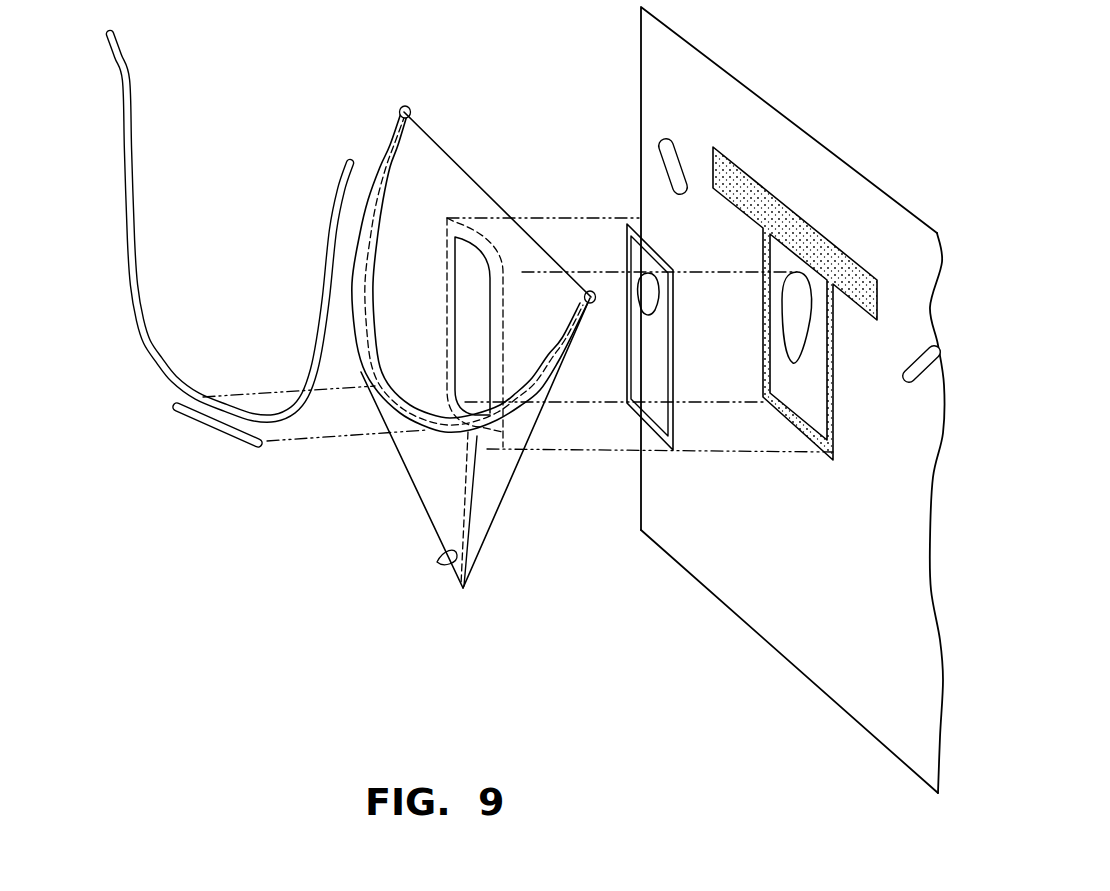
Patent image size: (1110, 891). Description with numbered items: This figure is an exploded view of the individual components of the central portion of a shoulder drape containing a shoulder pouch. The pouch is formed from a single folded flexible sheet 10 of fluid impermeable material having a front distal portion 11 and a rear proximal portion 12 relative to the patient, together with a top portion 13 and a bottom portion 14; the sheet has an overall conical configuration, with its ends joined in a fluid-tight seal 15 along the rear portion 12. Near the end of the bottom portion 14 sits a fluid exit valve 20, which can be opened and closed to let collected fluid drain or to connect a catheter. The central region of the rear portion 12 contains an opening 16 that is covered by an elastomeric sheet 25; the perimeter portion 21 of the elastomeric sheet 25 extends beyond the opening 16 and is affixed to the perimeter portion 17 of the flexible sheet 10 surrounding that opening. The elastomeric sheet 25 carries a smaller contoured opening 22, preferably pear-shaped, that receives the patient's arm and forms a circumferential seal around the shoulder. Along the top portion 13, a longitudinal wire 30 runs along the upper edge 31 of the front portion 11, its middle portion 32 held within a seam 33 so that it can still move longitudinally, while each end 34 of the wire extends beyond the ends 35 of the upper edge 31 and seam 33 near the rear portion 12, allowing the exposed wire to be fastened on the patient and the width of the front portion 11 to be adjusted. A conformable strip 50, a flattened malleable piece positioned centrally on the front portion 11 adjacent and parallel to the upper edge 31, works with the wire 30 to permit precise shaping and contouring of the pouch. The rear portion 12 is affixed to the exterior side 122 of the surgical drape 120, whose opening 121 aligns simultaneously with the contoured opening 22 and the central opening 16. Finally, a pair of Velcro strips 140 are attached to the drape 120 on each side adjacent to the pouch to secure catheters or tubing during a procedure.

The flexible sheet 10 is at (503, 498).
The front distal portion 11 is at (410, 480).
The rear proximal portion 12 is at (437, 178).
The top portion 13 is at (383, 397).
The bottom portion 14 is at (480, 557).
The fluid-tight seal 15 is at (480, 237).
The opening 16 is at (492, 283).
The perimeter portion of the flexible sheet 17 is at (445, 265).
The fluid exit valve 20 is at (456, 567).
The perimeter portion of the elastomeric sheet 21 is at (668, 417).
The contoured opening 22 is at (641, 294).
The elastomeric sheet 25 is at (652, 392).
The longitudinal wire 30 is at (152, 342).
The upper edge 31 is at (384, 136).
The middle portion of the wire 32 is at (173, 368).
The seam 33 is at (383, 183).
The wire end 34 is at (127, 52).
The ends of the upper edge 35 is at (403, 106).
The conformable strip 50 is at (173, 410).
The surgical drape 120 is at (793, 400).
The drape opening 121 is at (797, 338).
The exterior side of the drape 122 is at (892, 735).
The Velcro strips 140 is at (668, 137).